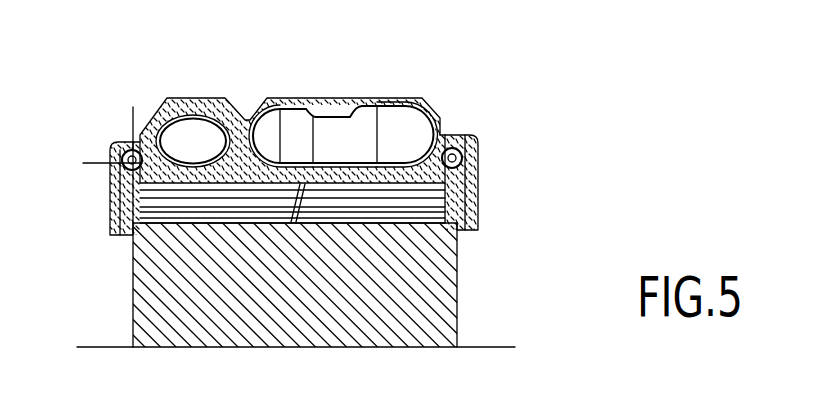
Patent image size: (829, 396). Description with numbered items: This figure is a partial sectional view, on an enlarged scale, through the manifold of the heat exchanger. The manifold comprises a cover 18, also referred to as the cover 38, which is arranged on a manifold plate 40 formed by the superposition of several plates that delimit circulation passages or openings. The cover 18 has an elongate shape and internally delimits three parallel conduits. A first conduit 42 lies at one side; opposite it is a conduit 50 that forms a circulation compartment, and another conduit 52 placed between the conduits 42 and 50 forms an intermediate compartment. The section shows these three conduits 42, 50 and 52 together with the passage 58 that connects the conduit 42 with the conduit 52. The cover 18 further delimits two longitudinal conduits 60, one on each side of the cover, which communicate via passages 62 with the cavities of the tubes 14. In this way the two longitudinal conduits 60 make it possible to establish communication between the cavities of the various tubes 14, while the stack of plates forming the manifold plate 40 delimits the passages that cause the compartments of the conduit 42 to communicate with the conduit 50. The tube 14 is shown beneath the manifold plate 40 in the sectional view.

The tube 14 is at (130, 285).
The cover 18 is at (404, 92).
The cover 38 is at (311, 116).
The manifold plate 40 is at (110, 210).
The first conduit 42 is at (408, 132).
The conduit 50 is at (194, 134).
The conduit 52 is at (284, 128).
The passage 58 is at (349, 128).
The longitudinal conduit 60 is at (121, 152).
The passage 62 is at (110, 192).